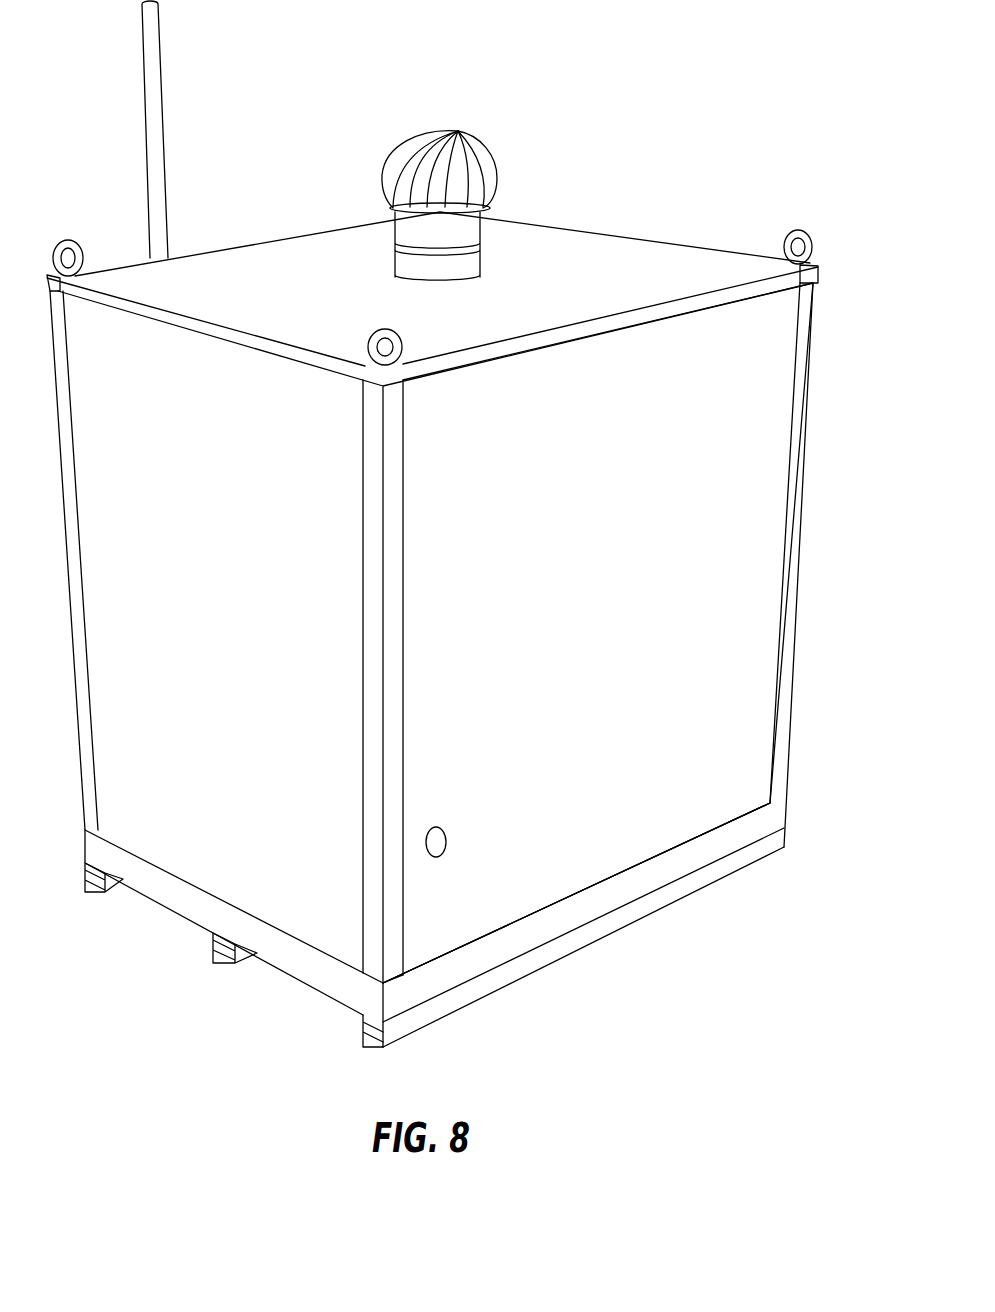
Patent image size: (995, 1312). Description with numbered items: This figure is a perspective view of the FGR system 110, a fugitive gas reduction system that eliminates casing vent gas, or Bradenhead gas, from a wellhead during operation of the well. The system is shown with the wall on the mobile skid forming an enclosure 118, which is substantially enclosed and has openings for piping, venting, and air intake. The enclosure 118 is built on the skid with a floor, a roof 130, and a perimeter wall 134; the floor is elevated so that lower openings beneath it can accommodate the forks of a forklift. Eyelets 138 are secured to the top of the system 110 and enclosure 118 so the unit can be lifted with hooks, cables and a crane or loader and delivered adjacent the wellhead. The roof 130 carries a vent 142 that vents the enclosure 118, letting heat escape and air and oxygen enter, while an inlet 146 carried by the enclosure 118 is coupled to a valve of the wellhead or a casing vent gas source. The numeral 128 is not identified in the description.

The FGR system 110 is at (248, 997).
The enclosure 118 is at (757, 568).
The base frame 128 is at (670, 880).
The roof 130 is at (575, 243).
The perimeter wall 134 is at (728, 682).
The eyelets 138 is at (58, 238).
The vent 142 is at (470, 138).
The inlet 146 is at (436, 858).